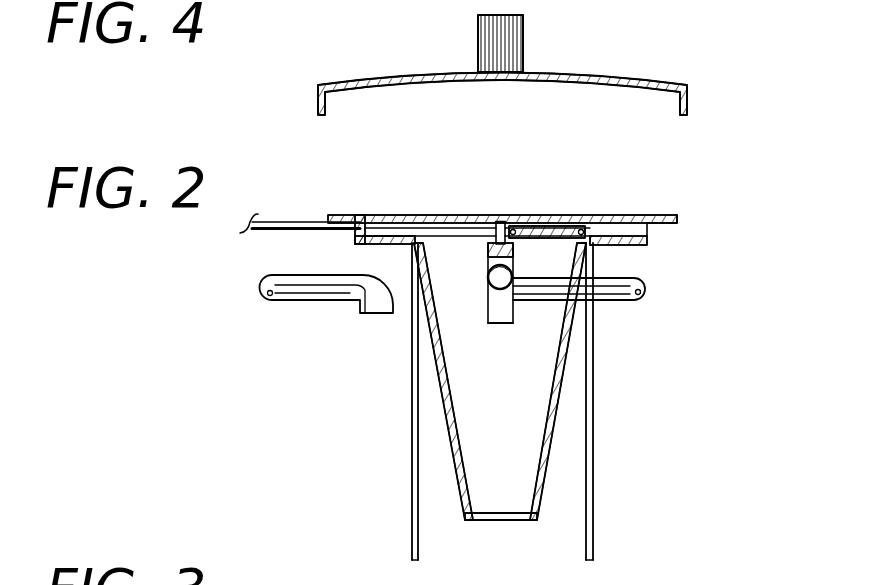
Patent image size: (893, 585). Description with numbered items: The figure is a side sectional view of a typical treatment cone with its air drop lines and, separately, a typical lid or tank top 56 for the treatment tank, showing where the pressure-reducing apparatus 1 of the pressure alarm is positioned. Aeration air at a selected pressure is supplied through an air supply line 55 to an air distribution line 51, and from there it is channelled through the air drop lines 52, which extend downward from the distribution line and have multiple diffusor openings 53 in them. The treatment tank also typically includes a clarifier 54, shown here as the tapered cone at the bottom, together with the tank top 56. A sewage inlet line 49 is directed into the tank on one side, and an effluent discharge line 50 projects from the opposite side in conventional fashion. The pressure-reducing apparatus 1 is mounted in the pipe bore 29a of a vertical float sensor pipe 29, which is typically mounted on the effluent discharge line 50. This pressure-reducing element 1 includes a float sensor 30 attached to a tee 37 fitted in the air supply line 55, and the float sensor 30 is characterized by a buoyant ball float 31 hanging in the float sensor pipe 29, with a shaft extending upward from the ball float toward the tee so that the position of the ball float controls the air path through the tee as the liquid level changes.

In FIG. 2, the pressure-reducing apparatus 1 is at (484, 248).
In FIG. 2, the vertical float sensor pipe 29 is at (518, 333).
In FIG. 2, the pipe bore 29a is at (500, 328).
In FIG. 2, the float sensor 30 is at (520, 253).
In FIG. 2, the ball float 31 is at (489, 268).
In FIG. 2, the tee 37 is at (502, 218).
In FIG. 2, the sewage inlet line 49 is at (357, 318).
In FIG. 2, the effluent discharge line 50 is at (622, 310).
In FIG. 4, the air distribution line 51 is at (600, 0).
In FIG. 2, the air drop lines 52 is at (413, 388).
In FIG. 2, the diffusor openings 53 is at (413, 482).
In FIG. 2, the clarifier 54 is at (517, 520).
In FIG. 2, the air supply line 55 is at (302, 226).
In FIG. 4, the tank top 56 is at (400, 72).